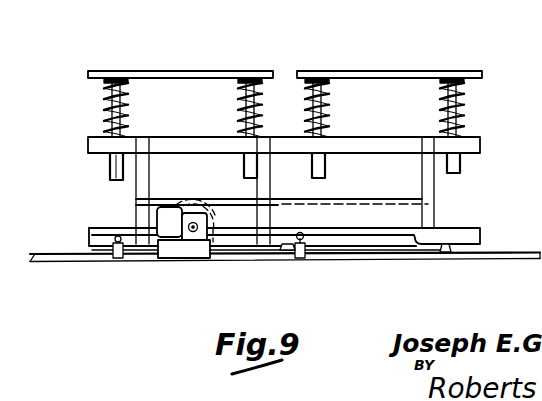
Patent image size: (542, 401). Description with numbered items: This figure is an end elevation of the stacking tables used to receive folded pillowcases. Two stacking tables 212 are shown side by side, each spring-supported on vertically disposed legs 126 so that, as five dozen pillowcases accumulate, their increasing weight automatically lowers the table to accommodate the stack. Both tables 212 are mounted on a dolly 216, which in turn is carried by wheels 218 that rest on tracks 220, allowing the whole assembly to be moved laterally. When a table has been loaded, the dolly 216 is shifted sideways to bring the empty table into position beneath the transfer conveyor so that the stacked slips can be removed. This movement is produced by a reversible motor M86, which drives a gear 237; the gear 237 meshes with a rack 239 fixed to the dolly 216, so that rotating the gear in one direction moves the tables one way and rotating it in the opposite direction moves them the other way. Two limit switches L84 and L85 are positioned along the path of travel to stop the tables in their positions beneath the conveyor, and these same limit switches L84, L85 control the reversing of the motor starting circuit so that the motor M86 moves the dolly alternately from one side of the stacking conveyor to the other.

The stacking table 212 is at (212, 70).
The vertically disposed leg 126 is at (112, 169).
The gear 237 is at (213, 215).
The rack 239 is at (350, 195).
The dolly 216 is at (455, 225).
The wheel 218 is at (452, 250).
The track 220 is at (245, 256).
The limit switch L84 is at (118, 263).
The reversible motor M86 is at (192, 258).
The limit switch L85 is at (300, 262).